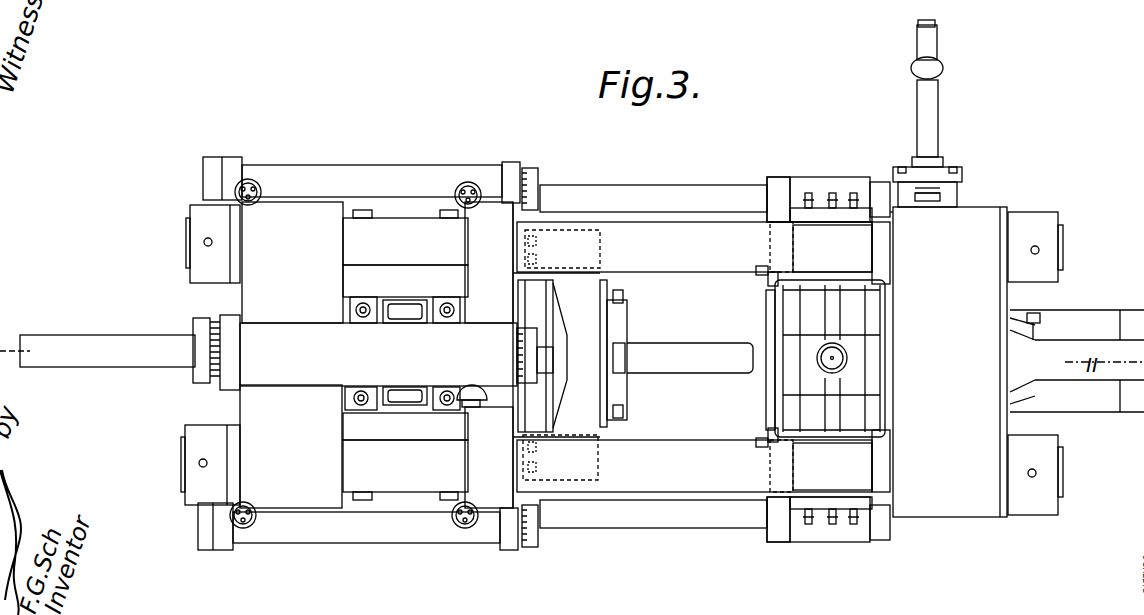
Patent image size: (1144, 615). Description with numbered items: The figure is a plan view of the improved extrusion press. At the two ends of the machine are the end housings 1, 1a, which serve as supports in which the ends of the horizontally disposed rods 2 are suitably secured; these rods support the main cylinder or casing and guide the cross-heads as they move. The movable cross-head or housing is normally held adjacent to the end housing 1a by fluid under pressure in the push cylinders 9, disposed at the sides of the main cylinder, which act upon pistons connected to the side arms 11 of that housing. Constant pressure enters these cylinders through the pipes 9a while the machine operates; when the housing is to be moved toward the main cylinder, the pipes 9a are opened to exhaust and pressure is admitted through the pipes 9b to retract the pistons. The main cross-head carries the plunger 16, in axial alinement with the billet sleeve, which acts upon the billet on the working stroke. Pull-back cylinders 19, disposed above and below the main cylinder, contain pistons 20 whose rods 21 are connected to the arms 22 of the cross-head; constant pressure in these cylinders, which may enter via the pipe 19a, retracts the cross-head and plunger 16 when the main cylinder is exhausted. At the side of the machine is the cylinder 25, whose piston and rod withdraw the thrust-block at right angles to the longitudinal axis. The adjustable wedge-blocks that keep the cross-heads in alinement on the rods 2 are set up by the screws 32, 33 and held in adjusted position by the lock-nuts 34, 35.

The end housing 1 is at (262, 355).
The end housing 1a is at (976, 362).
The horizontally disposed rods 2 is at (703, 357).
The push cylinders 9 is at (358, 172).
The pipes 9a is at (261, 189).
The pipes 9b is at (455, 195).
The side arms 11 is at (826, 182).
The plunger 16 is at (676, 350).
The pull-back cylinders 19 is at (396, 354).
The pipe 19a is at (472, 407).
The pistons 20 is at (120, 352).
The rods 21 is at (546, 365).
The arms 22 is at (598, 342).
The cylinder 25 is at (930, 103).
The screws 32 is at (810, 196).
The screws 33 is at (760, 276).
The lock-nuts 34 is at (800, 200).
The lock-nuts 35 is at (770, 288).